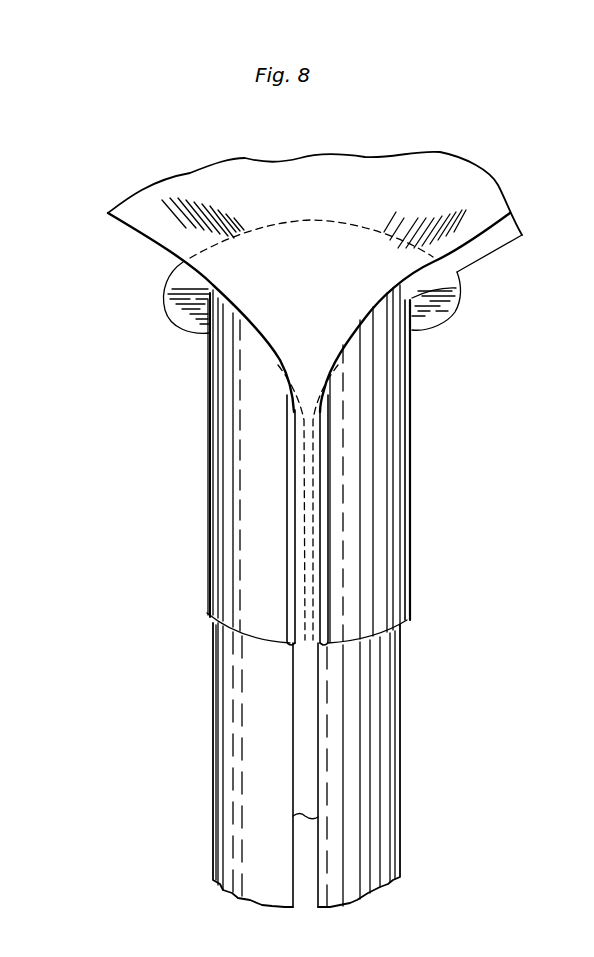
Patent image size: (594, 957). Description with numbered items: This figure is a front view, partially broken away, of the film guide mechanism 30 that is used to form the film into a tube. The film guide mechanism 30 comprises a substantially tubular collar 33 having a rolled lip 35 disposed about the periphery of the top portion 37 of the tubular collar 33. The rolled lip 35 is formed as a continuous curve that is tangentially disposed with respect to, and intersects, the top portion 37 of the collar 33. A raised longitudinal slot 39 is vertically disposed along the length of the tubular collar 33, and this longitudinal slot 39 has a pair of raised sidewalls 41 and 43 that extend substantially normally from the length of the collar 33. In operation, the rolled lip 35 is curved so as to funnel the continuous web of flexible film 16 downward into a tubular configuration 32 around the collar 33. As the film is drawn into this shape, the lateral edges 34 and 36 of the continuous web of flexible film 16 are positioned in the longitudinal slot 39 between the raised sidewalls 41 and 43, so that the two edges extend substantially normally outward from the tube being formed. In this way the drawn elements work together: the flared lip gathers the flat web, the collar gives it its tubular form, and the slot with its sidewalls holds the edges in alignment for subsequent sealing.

The continuous web of flexible film 16 is at (190, 203).
The film guide mechanism 30 is at (431, 190).
The tubular configuration 32 is at (353, 717).
The tubular collar 33 is at (410, 430).
The lateral edge 34 is at (293, 770).
The rolled lip 35 is at (452, 277).
The lateral edge 36 is at (325, 785).
The top portion 37 is at (458, 298).
The raised longitudinal slot 39 is at (313, 555).
The raised sidewall 41 is at (287, 523).
The raised sidewall 43 is at (360, 600).